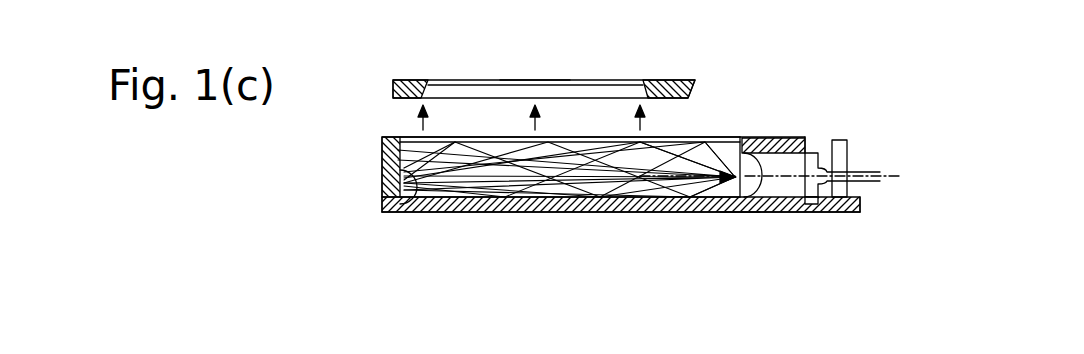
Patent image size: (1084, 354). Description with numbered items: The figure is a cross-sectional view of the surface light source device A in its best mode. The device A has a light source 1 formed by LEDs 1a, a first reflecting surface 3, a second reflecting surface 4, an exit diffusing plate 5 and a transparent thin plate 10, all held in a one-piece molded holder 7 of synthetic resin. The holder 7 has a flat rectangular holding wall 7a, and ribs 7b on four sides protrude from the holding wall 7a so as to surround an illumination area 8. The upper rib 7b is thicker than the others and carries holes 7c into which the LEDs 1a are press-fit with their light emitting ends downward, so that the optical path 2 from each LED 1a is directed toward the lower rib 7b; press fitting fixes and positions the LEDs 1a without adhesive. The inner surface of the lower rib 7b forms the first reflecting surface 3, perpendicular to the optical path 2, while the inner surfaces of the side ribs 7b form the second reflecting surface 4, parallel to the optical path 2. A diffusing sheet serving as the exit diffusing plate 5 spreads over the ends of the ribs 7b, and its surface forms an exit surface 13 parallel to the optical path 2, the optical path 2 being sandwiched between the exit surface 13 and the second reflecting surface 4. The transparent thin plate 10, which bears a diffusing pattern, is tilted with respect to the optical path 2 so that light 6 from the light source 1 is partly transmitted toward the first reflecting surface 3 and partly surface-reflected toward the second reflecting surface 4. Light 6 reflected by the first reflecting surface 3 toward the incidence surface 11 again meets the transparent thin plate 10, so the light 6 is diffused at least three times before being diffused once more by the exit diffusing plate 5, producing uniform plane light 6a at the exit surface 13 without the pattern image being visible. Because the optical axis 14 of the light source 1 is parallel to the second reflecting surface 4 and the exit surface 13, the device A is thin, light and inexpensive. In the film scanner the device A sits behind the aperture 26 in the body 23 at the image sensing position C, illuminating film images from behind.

The light source 1 is at (821, 142).
The LED 1a is at (783, 163).
The optical path 2 is at (675, 178).
The first reflecting surface 3 is at (415, 197).
The second reflecting surface 4 is at (518, 192).
The exit diffusing plate 5 is at (507, 148).
The light 6 is at (712, 200).
The uniform plane light 6a is at (418, 125).
The holder 7 is at (877, 215).
The holding wall 7a is at (785, 213).
The rib 7b is at (390, 187).
The hole 7c is at (830, 167).
The illumination area 8 is at (445, 148).
The transparent thin plate 10 is at (617, 160).
The incidence surface 11 is at (736, 208).
The exit surface 13 is at (588, 137).
The optical axis 14 is at (795, 188).
The body 23 is at (687, 78).
The aperture 26 is at (628, 80).
The surface light source device A is at (457, 228).
The image sensing position C is at (533, 72).